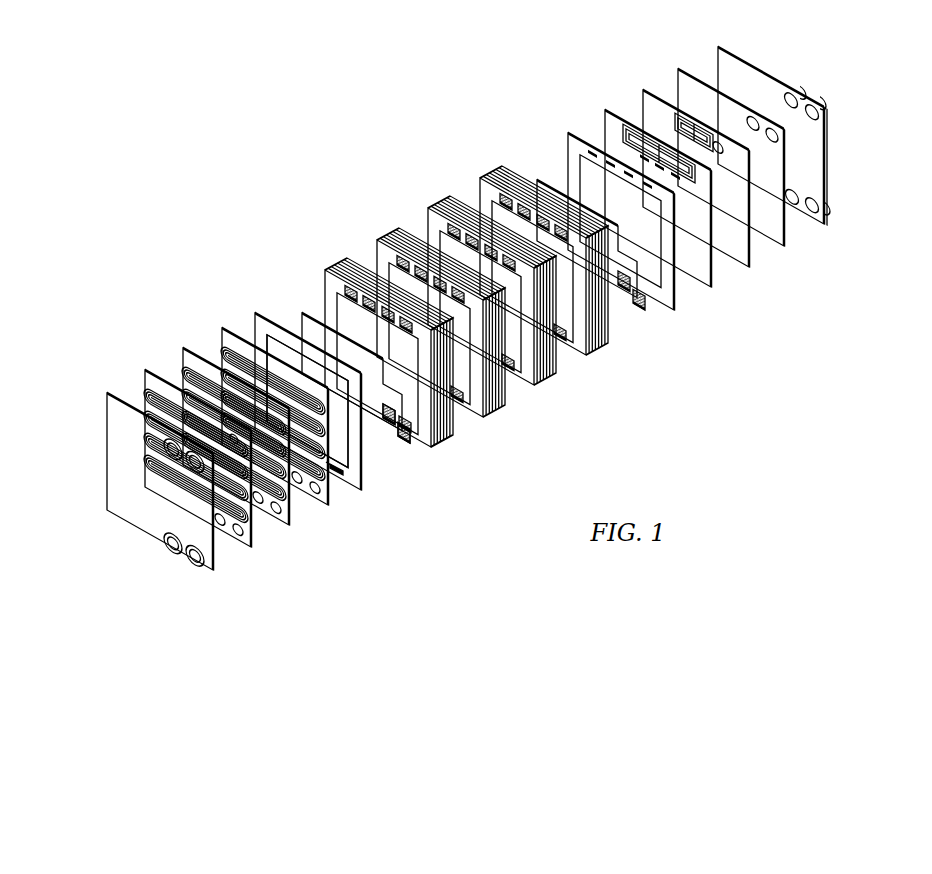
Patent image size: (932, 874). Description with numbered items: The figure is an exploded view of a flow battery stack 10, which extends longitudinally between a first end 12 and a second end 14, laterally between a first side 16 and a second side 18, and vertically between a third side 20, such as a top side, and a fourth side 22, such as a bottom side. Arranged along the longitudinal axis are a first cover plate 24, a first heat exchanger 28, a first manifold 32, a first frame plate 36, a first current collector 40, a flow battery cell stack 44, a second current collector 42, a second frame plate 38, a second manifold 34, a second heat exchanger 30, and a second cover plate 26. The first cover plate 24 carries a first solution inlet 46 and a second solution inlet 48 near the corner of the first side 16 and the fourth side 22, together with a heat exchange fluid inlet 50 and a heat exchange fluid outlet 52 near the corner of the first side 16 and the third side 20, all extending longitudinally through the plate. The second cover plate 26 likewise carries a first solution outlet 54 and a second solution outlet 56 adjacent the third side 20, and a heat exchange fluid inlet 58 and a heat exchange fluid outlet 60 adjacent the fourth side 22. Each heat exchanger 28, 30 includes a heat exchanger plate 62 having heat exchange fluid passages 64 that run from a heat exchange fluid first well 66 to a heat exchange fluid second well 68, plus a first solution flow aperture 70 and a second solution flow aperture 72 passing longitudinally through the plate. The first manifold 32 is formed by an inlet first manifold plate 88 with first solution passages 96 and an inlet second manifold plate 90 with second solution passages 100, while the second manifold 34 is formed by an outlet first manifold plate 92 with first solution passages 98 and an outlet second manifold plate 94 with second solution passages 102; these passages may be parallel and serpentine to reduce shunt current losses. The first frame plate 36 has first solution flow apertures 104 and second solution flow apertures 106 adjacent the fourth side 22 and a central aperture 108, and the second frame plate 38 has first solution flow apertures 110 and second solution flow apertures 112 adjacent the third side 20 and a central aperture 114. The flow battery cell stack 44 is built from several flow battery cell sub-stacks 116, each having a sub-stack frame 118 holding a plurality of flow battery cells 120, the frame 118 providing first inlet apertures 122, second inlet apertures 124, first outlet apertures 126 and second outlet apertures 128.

The flow battery stack 10 is at (245, 143).
The first end 12 is at (75, 498).
The second end 14 is at (858, 133).
The first side 16 is at (228, 565).
The second side 18 is at (100, 506).
The third side 20 is at (820, 87).
The fourth side 22 is at (818, 232).
The first cover plate 24 is at (107, 462).
The second cover plate 26 is at (826, 175).
The first heat exchanger 28 is at (125, 355).
The second heat exchanger 30 is at (775, 262).
The first manifold 32 is at (175, 320).
The second manifold 34 is at (702, 290).
The first frame plate 36 is at (255, 312).
The second frame plate 38 is at (568, 138).
The first current collector 40 is at (303, 312).
The second current collector 42 is at (537, 181).
The flow battery cell stack 44 is at (406, 215).
The first solution inlet 46 is at (168, 548).
The second solution inlet 48 is at (190, 560).
The heat exchange fluid inlet 50 is at (185, 455).
The heat exchange fluid outlet 52 is at (172, 440).
The first solution outlet 54 is at (792, 97).
The second solution outlet 56 is at (818, 103).
The heat exchange fluid inlet 58 is at (790, 200).
The heat exchange fluid outlet 60 is at (812, 208).
The heat exchanger plate 62 is at (145, 385).
The heat exchange fluid passages 64 is at (162, 375).
The heat exchange fluid first well 66 is at (200, 380).
The heat exchange fluid second well 68 is at (227, 432).
The first solution flow aperture 70 is at (222, 540).
The second solution flow aperture 72 is at (243, 546).
The inlet first manifold plate 88 is at (290, 510).
The inlet second manifold plate 90 is at (270, 522).
The outlet first manifold plate 92 is at (672, 280).
The outlet second manifold plate 94 is at (742, 272).
The first solution passages 96 is at (305, 492).
The first solution passages 98 is at (610, 150).
The second solution passages 100 is at (233, 437).
The second solution passages 102 is at (665, 108).
The first solution flow apertures 104 is at (345, 470).
The second solution flow apertures 106 is at (332, 478).
The central aperture 108 is at (280, 330).
The first solution flow apertures 110 is at (582, 148).
The second solution flow apertures 112 is at (612, 165).
The central aperture 114 is at (628, 288).
The flow battery cell sub-stack 116 is at (330, 256).
The sub-stack frame 118 is at (452, 450).
The flow battery cells 120 is at (510, 372).
The first inlet apertures 122 is at (388, 425).
The second inlet apertures 124 is at (405, 435).
The first outlet apertures 126 is at (497, 176).
The second outlet apertures 128 is at (522, 192).